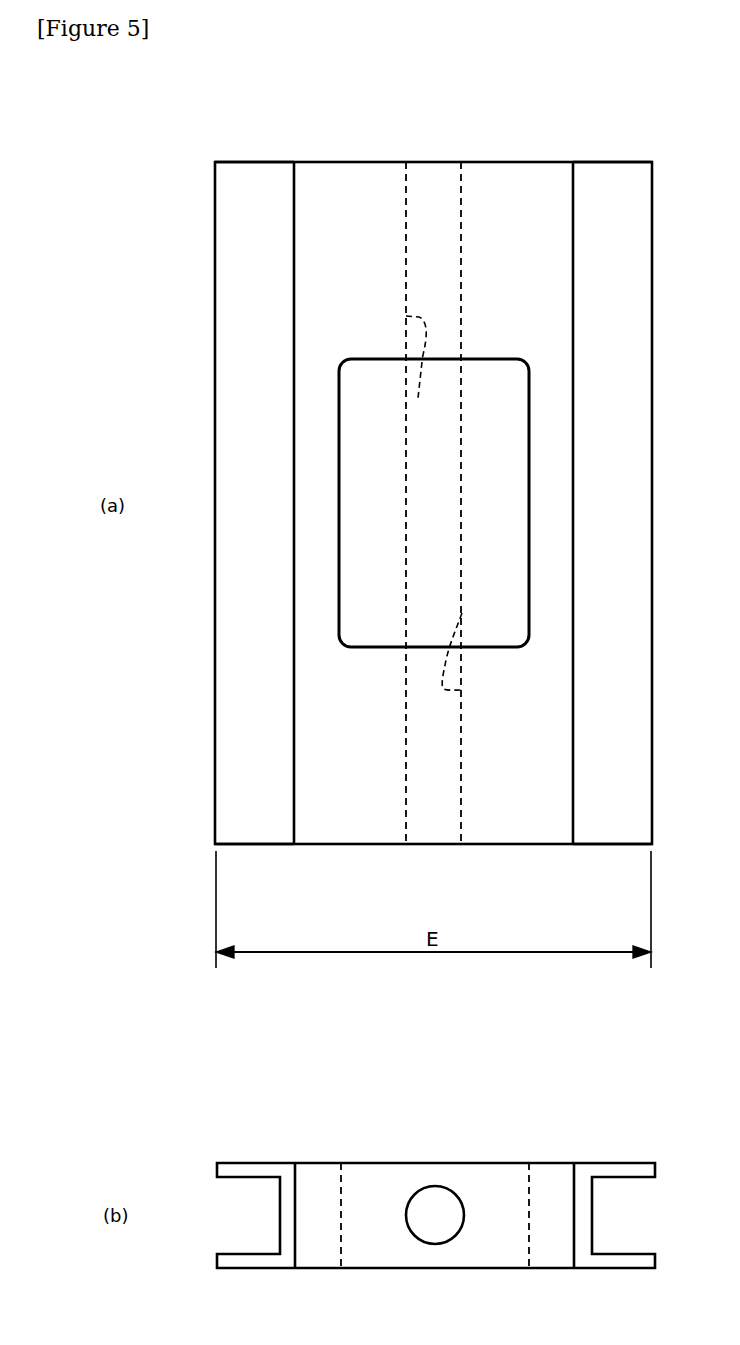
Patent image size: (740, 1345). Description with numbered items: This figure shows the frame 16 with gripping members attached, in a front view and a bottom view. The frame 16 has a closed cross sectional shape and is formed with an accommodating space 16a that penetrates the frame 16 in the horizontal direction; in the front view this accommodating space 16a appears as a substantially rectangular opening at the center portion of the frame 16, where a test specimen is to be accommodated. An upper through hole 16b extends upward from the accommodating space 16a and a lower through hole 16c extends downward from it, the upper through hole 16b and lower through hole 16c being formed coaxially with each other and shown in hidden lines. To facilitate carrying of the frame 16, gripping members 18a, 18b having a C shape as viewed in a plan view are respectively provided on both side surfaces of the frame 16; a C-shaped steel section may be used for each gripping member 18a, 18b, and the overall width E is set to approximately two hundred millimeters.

The frame 16 is at (371, 173).
The accommodating space 16a is at (499, 360).
The upper through hole 16b is at (419, 371).
The lower through hole 16c is at (432, 1188).
The gripping member 18a is at (247, 175).
The gripping member 18b is at (623, 173).